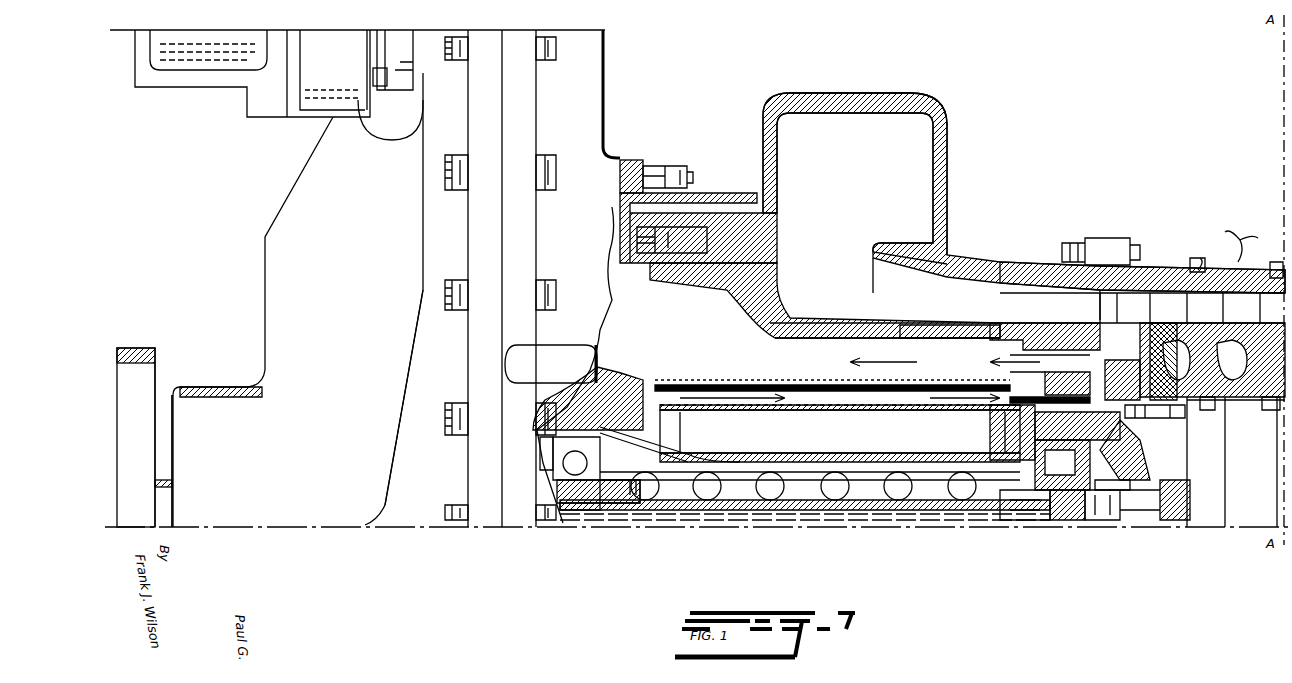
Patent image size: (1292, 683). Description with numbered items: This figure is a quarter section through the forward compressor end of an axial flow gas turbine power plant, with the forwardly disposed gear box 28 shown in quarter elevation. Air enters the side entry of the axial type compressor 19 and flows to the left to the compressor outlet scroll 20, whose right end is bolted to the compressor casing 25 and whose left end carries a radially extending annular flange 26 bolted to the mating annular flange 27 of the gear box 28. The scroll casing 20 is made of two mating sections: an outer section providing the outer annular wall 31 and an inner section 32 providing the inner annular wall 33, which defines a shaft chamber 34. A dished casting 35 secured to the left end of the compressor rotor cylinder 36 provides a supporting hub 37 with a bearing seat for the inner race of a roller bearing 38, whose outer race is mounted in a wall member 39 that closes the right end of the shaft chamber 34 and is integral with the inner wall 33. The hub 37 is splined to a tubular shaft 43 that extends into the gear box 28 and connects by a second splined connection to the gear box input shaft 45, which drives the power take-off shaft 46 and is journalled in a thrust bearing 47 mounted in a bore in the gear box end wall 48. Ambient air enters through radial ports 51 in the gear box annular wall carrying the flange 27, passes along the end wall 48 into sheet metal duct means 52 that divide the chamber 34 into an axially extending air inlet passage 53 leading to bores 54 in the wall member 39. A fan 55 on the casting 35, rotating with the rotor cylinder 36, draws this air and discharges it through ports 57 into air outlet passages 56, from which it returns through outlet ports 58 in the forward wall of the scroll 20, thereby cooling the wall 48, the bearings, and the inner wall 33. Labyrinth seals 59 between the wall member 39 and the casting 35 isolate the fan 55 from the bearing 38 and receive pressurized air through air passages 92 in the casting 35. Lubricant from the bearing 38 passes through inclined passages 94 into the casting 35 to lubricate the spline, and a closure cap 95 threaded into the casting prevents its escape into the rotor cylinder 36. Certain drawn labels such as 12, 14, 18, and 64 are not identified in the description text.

The bearing sleeve 12 is at (1078, 505).
The bearing support 14 is at (630, 500).
The mounting base 18 is at (179, 474).
The axial type compressor 19 is at (610, 152).
The compressor outlet scroll 20 is at (948, 195).
The compressor casing 25 is at (1162, 270).
The annular flange 26 is at (668, 165).
The annular flange 27 is at (637, 160).
The gear box 28 is at (296, 200).
The outer annular wall 31 is at (858, 118).
The inner section 32 is at (742, 300).
The inner annular wall 33 is at (808, 323).
The shaft chamber 34 is at (745, 353).
The dished casting 35 is at (1150, 428).
The compressor rotor cylinder 36 is at (1243, 398).
The supporting hub 37 is at (1048, 505).
The roller bearing 38 is at (1022, 508).
The wall member 39 is at (1050, 395).
The tubular shaft 43 is at (862, 505).
The gear box input shaft 45 is at (580, 490).
The power take-off shaft 46 is at (152, 348).
The thrust bearing 47 is at (560, 470).
The end wall 48 is at (598, 375).
The ports 51 is at (600, 347).
The sheet metal duct means 52 is at (660, 383).
The air inlet passage 53 is at (803, 392).
The bores 54 is at (1050, 375).
The fan 55 is at (1112, 380).
The air outlet passages 56 is at (838, 337).
The ports 57 is at (1045, 337).
The outlet ports 58 is at (343, 518).
The labyrinth seals 59 is at (1130, 450).
The inner tube 64 is at (832, 455).
The air passages 92 is at (1125, 465).
The inclined passages 94 is at (1112, 473).
The closure cap 95 is at (1170, 508).